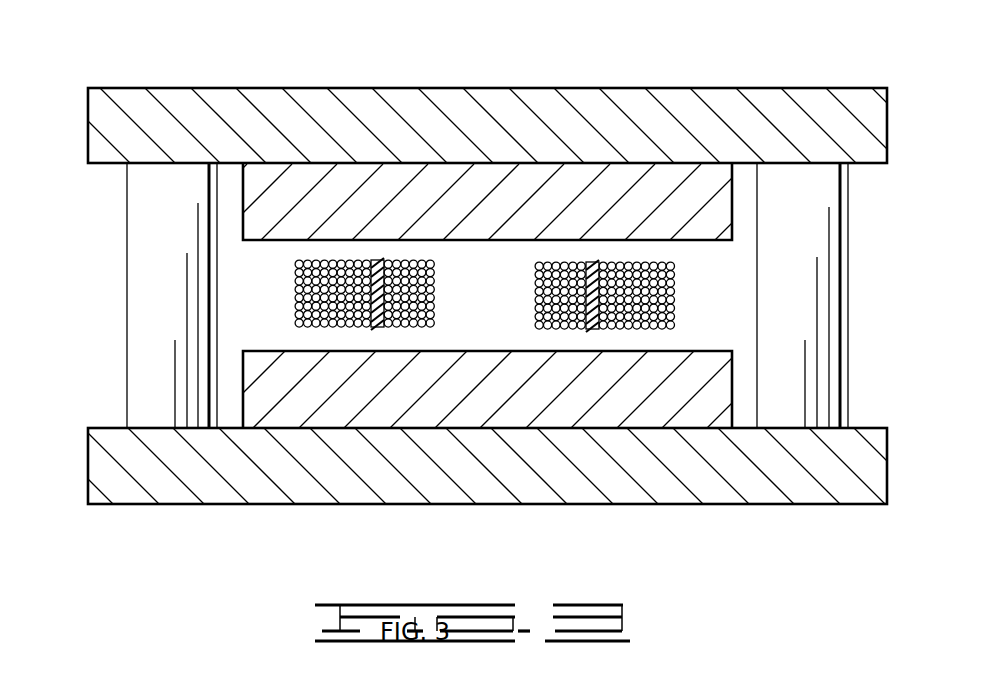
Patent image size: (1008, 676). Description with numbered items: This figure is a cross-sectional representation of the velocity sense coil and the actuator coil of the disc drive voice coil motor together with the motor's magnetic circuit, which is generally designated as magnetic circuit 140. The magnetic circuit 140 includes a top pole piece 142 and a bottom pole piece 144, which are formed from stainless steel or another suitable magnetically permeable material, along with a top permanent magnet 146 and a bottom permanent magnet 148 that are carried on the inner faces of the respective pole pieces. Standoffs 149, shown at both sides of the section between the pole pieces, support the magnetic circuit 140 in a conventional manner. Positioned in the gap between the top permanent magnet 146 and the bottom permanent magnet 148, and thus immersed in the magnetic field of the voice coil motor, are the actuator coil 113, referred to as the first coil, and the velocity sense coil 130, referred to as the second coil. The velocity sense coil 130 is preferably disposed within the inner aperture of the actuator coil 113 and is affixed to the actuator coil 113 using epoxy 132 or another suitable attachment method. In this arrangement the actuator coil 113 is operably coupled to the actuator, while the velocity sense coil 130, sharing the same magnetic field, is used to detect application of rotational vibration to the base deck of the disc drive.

The magnetic circuit 140 is at (712, 58).
The top pole piece 142 is at (178, 98).
The bottom pole piece 144 is at (197, 482).
The top permanent magnet 146 is at (387, 190).
The bottom permanent magnet 148 is at (428, 410).
The standoffs 149 is at (150, 285).
The actuator coil 113 is at (296, 294).
The velocity sense coil 130 is at (427, 287).
The epoxy 132 is at (381, 329).